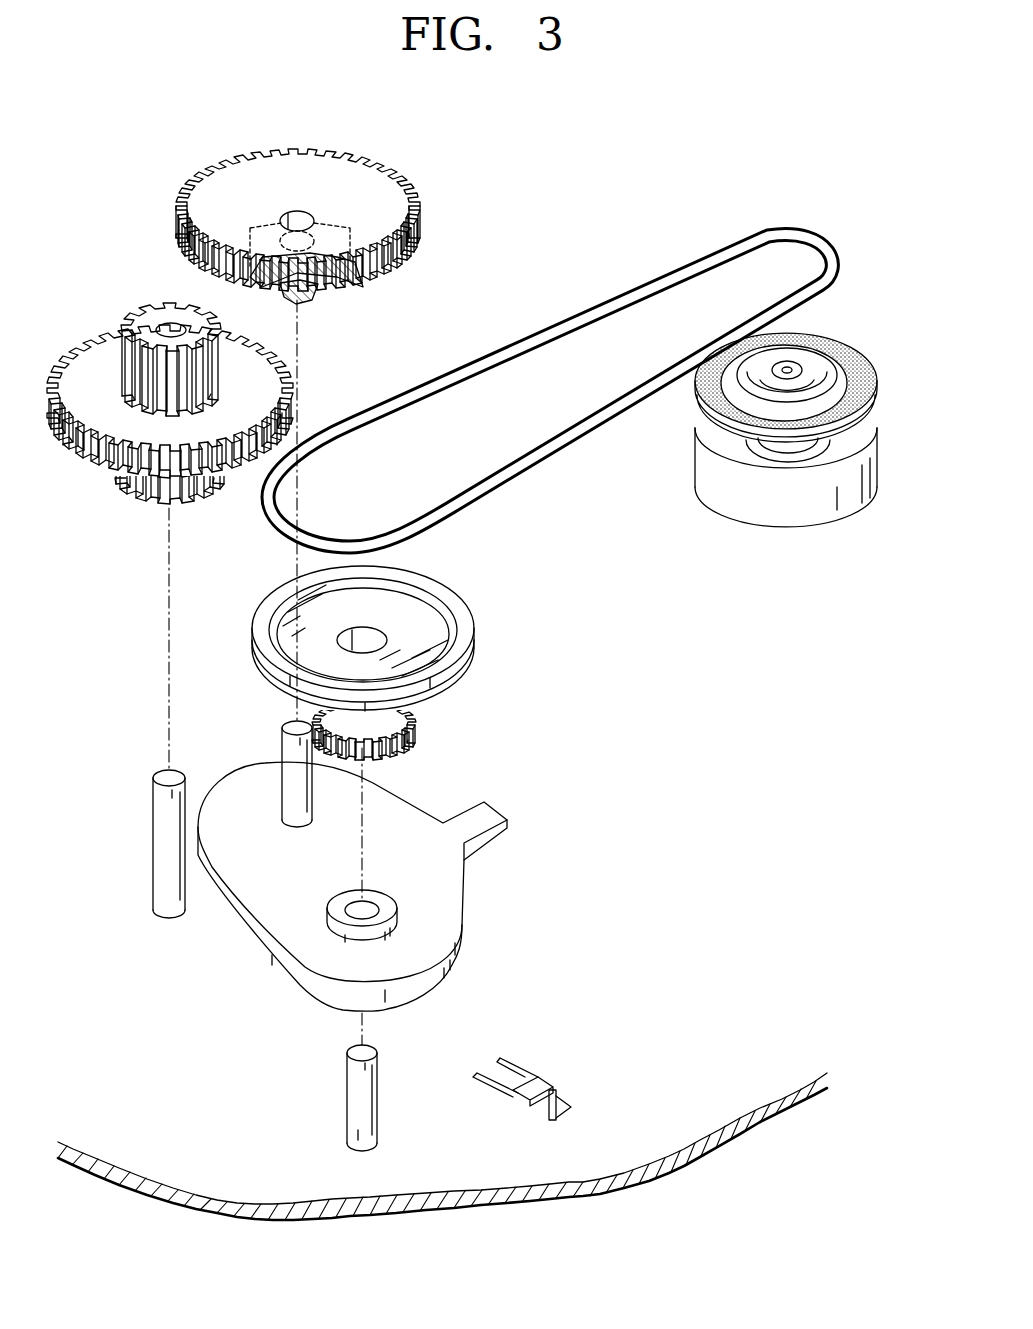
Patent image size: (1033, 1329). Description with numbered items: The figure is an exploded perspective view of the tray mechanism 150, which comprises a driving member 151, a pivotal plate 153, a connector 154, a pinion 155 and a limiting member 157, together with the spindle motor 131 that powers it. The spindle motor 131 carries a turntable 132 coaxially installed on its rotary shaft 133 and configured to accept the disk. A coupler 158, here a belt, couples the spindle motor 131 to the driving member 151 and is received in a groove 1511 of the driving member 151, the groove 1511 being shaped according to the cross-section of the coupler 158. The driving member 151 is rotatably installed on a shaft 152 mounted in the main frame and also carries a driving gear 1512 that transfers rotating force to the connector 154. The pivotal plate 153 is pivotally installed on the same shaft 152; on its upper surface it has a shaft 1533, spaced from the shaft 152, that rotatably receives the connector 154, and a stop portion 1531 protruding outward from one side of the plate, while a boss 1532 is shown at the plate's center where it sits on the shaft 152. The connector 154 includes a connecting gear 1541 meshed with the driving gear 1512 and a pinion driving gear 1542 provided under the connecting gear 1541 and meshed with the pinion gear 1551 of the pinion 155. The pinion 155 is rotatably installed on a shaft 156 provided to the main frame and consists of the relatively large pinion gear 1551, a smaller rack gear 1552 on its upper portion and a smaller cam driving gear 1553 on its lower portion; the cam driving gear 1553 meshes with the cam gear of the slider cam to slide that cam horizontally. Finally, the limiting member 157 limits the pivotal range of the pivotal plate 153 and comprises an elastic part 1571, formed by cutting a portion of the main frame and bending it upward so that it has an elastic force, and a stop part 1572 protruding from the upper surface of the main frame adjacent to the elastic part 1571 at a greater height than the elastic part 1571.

The tray mechanism 150 is at (160, 128).
The connector 154 is at (440, 194).
The connecting gear 1541 is at (400, 258).
The pinion driving gear 1542 is at (304, 290).
The pinion 155 is at (208, 526).
The pinion gear 1551 is at (104, 466).
The rack gear 1552 is at (163, 308).
The cam driving gear 1553 is at (166, 503).
The coupler 158 is at (690, 272).
The spindle motor 131 is at (789, 522).
The turntable 132 is at (840, 343).
The rotary shaft 133 is at (770, 456).
The driving member 151 is at (498, 620).
The groove 1511 is at (462, 684).
The driving gear 1512 is at (398, 730).
The pivotal plate 153 is at (480, 924).
The stop portion 1531 is at (500, 836).
The bracket boss 1532 is at (371, 904).
The shaft 1533 is at (290, 803).
The shaft 156 is at (158, 869).
The shaft 152 is at (380, 1106).
The limiting member 157 is at (540, 1070).
The elastic part 1571 is at (552, 1088).
The stop part 1572 is at (562, 1114).